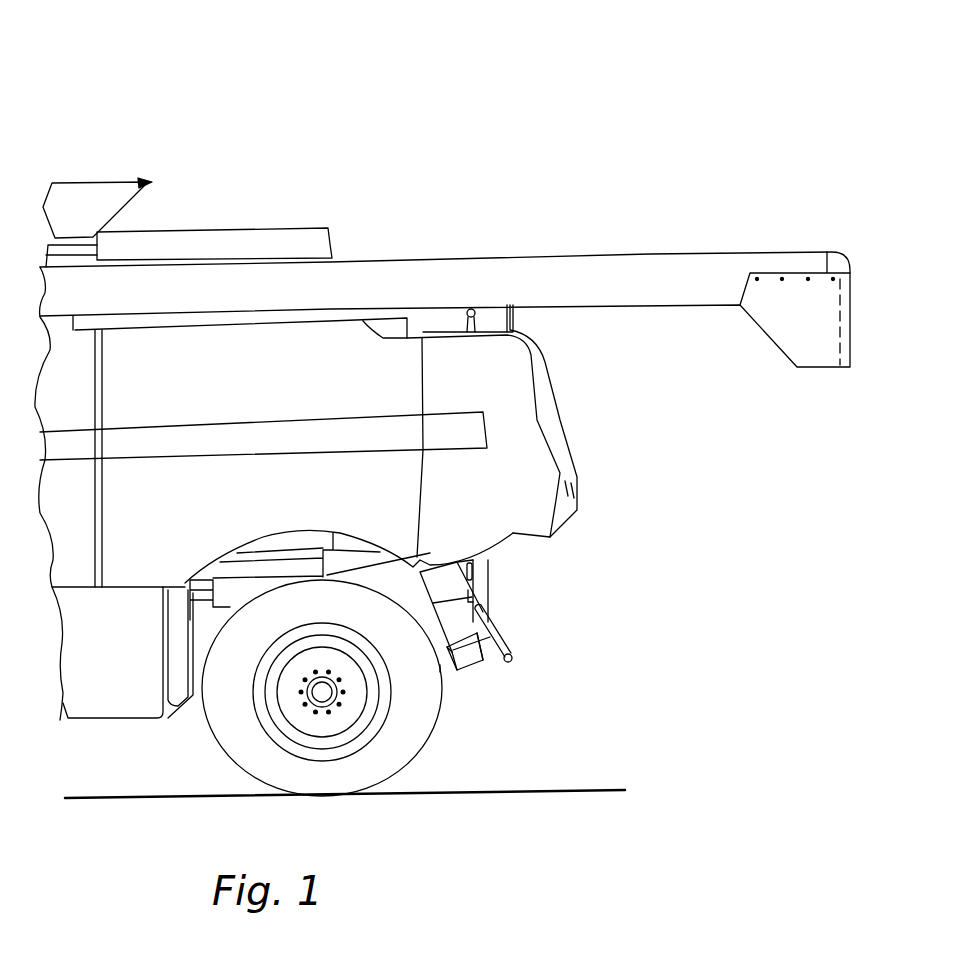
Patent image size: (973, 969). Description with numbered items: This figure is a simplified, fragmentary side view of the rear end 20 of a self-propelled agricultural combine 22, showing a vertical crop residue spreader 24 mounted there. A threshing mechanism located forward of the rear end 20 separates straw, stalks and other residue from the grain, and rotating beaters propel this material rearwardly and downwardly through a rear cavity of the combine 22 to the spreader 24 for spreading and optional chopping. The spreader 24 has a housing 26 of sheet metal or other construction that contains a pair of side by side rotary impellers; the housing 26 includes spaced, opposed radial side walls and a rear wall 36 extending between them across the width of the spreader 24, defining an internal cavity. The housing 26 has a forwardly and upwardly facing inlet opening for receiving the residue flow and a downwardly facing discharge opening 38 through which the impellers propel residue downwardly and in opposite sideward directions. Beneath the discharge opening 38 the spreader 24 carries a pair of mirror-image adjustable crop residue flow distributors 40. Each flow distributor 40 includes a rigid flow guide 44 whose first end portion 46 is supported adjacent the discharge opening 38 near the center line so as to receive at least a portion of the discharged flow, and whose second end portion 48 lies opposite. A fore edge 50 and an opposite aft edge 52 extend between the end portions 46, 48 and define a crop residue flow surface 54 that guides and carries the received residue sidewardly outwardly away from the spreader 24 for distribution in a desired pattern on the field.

The rear end 20 is at (577, 449).
The self-propelled agricultural combine 22 is at (822, 121).
The vertical crop residue spreader 24 is at (496, 618).
The housing 26 is at (432, 620).
The rear wall 36 is at (482, 667).
The discharge opening 38 is at (481, 669).
The adjustable crop residue flow distributor 40 is at (489, 673).
The flow guide 44 is at (455, 667).
The first end portion 46 is at (447, 652).
The second end portion 48 is at (487, 670).
The fore edge 50 is at (440, 672).
The aft edge 52 is at (500, 640).
The crop residue flow surface 54 is at (487, 656).